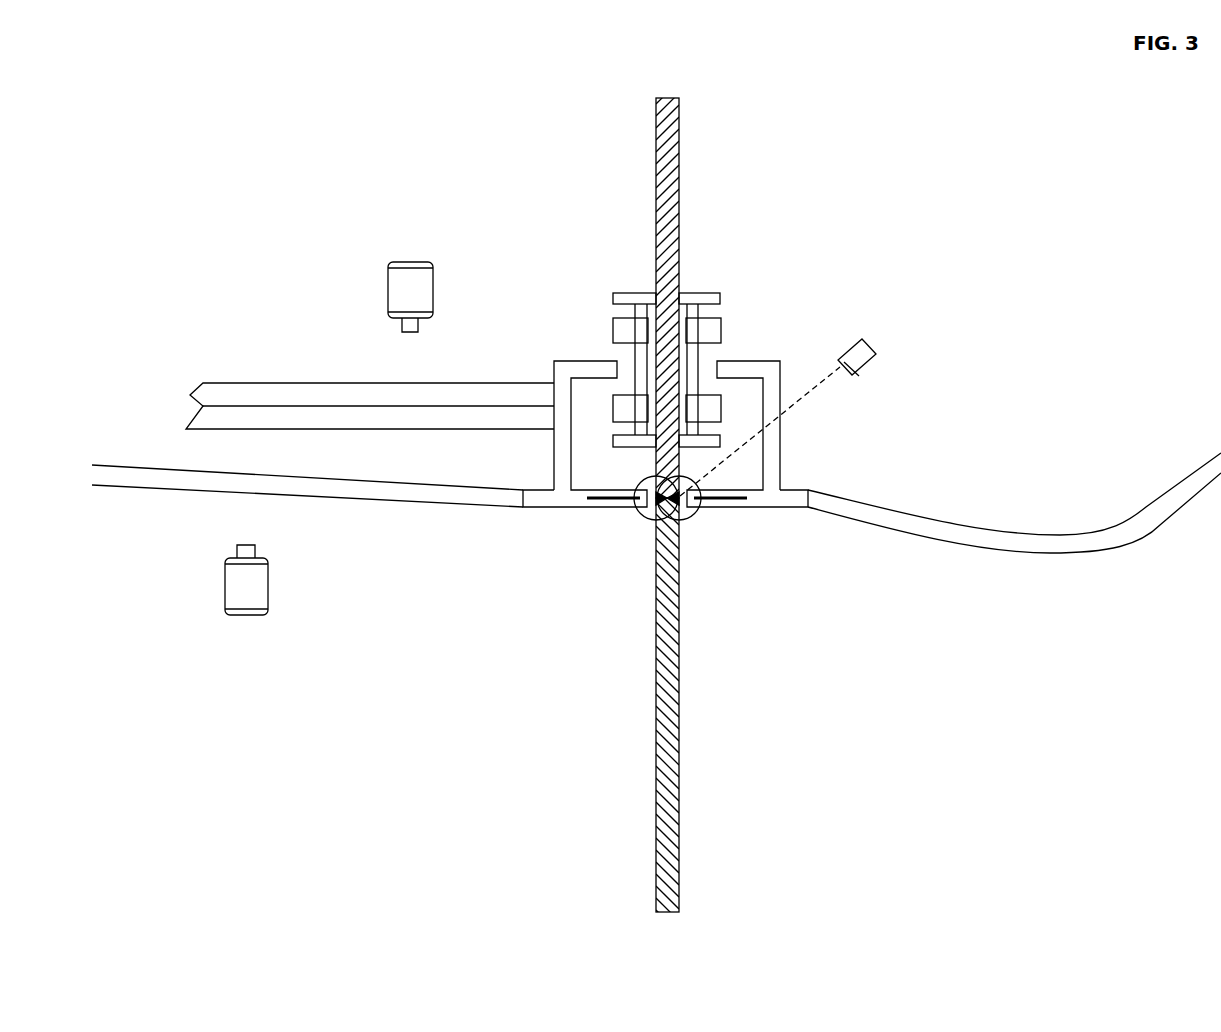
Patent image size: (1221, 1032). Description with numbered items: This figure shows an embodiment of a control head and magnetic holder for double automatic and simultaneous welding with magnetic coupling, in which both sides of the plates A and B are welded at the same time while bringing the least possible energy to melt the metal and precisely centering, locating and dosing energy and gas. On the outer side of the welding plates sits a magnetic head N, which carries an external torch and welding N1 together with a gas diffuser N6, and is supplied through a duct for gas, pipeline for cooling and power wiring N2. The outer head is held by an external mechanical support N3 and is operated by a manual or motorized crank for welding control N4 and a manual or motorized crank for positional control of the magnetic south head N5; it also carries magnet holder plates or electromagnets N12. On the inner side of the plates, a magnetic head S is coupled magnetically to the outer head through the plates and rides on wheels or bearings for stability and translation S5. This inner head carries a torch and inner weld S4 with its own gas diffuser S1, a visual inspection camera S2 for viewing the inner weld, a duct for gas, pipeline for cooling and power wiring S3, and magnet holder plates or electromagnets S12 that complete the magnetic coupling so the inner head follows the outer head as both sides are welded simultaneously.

The plate A is at (667, 160).
The plate B is at (667, 851).
The magnetic head N is at (647, 407).
The magnetic head S is at (687, 407).
The wheels or bearings for stability and translation S5 is at (692, 293).
The magnet holder plates or electromagnets N12 is at (626, 427).
The magnet holder plates or electromagnets S12 is at (710, 427).
The external torch and welding N1 is at (617, 498).
The gas diffuser N6 is at (655, 507).
The torch and inner weld S4 is at (680, 505).
The gas diffuser S1 is at (681, 507).
The external mechanical support N3 is at (453, 418).
The duct for gas, pipeline for cooling and power wiring N2 is at (483, 498).
The duct for gas, pipeline for cooling and power wiring S3 is at (843, 510).
The manual or motorized crank for positional control of the magnetic south head N5 is at (397, 293).
The manual or motorized crank for welding control N4 is at (253, 592).
The visual inspection camera S2 is at (858, 355).